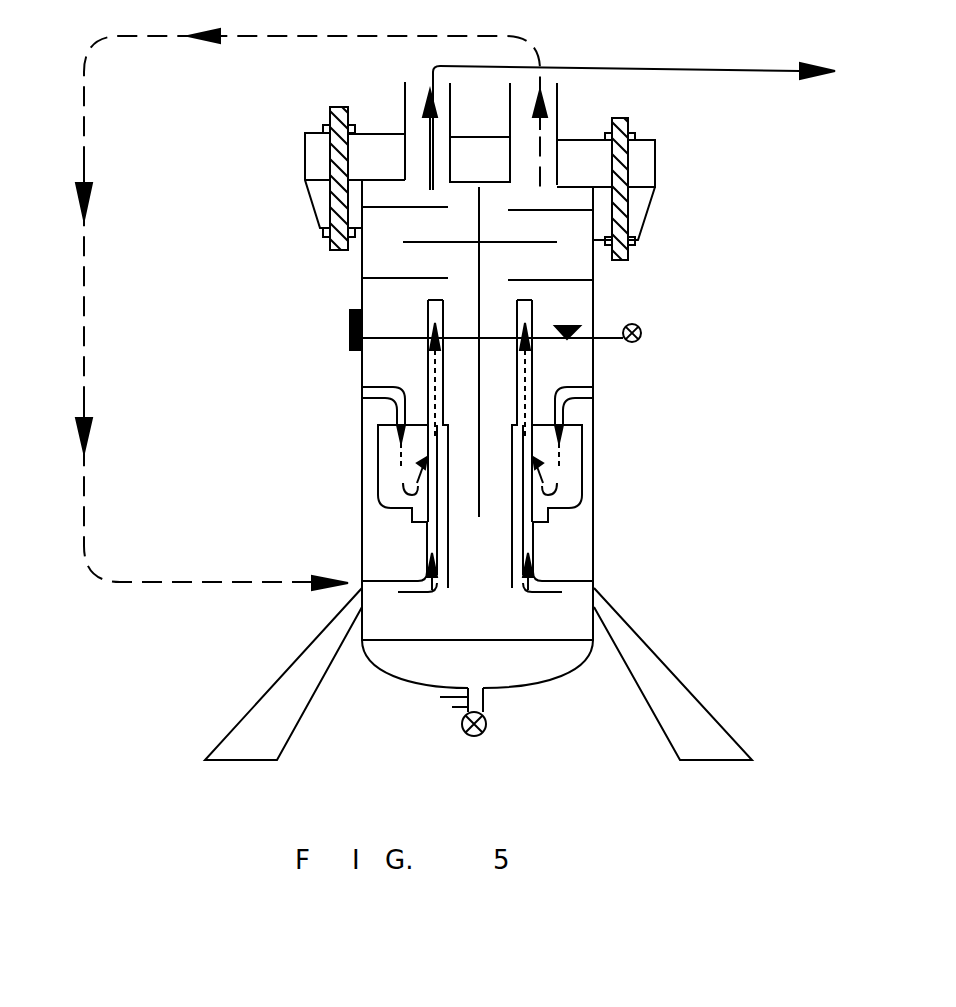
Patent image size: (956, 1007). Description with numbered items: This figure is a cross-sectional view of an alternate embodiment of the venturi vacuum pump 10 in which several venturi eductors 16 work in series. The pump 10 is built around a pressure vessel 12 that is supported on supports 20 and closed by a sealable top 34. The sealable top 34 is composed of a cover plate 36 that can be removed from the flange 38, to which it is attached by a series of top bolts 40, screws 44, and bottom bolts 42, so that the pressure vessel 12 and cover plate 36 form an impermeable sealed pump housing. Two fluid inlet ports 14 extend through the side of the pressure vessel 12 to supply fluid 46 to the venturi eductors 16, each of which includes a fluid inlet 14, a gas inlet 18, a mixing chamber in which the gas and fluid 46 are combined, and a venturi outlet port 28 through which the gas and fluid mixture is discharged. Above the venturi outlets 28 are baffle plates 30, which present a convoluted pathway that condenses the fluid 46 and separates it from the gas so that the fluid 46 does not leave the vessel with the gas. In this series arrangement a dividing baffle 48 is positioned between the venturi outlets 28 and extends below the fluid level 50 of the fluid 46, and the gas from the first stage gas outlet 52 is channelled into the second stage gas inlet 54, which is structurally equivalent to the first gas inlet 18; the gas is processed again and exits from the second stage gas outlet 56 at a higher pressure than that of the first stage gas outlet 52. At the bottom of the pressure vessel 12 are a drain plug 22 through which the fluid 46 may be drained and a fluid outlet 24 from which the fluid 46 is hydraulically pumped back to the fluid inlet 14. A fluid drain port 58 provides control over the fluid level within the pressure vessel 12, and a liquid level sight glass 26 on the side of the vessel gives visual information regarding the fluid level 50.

The pump 10 is at (758, 145).
The pressure vessel 12 is at (360, 507).
The fluid inlet port 14 is at (360, 397).
The venturi eductor 16 is at (378, 470).
The gas inlet 18 is at (593, 590).
The supports 20 is at (247, 717).
The drain plug 22 is at (474, 737).
The fluid outlet 24 is at (440, 703).
The liquid level sight glass 26 is at (350, 318).
The venturi outlet port 28 is at (524, 304).
The baffle plates 30 is at (530, 212).
The sealable top 34 is at (299, 238).
The cover plate 36 is at (657, 165).
The flange 38 is at (648, 212).
The top bolts 40 is at (638, 140).
The bottom bolts 42 is at (525, 244).
The screws 44 is at (625, 118).
The fluid 46 is at (496, 621).
The dividing baffle 48 is at (481, 306).
The fluid level 50 is at (573, 325).
The first stage gas outlet 52 is at (558, 88).
The second stage gas inlet 54 is at (358, 590).
The second stage gas outlet 56 is at (405, 82).
The fluid drain port 58 is at (641, 334).